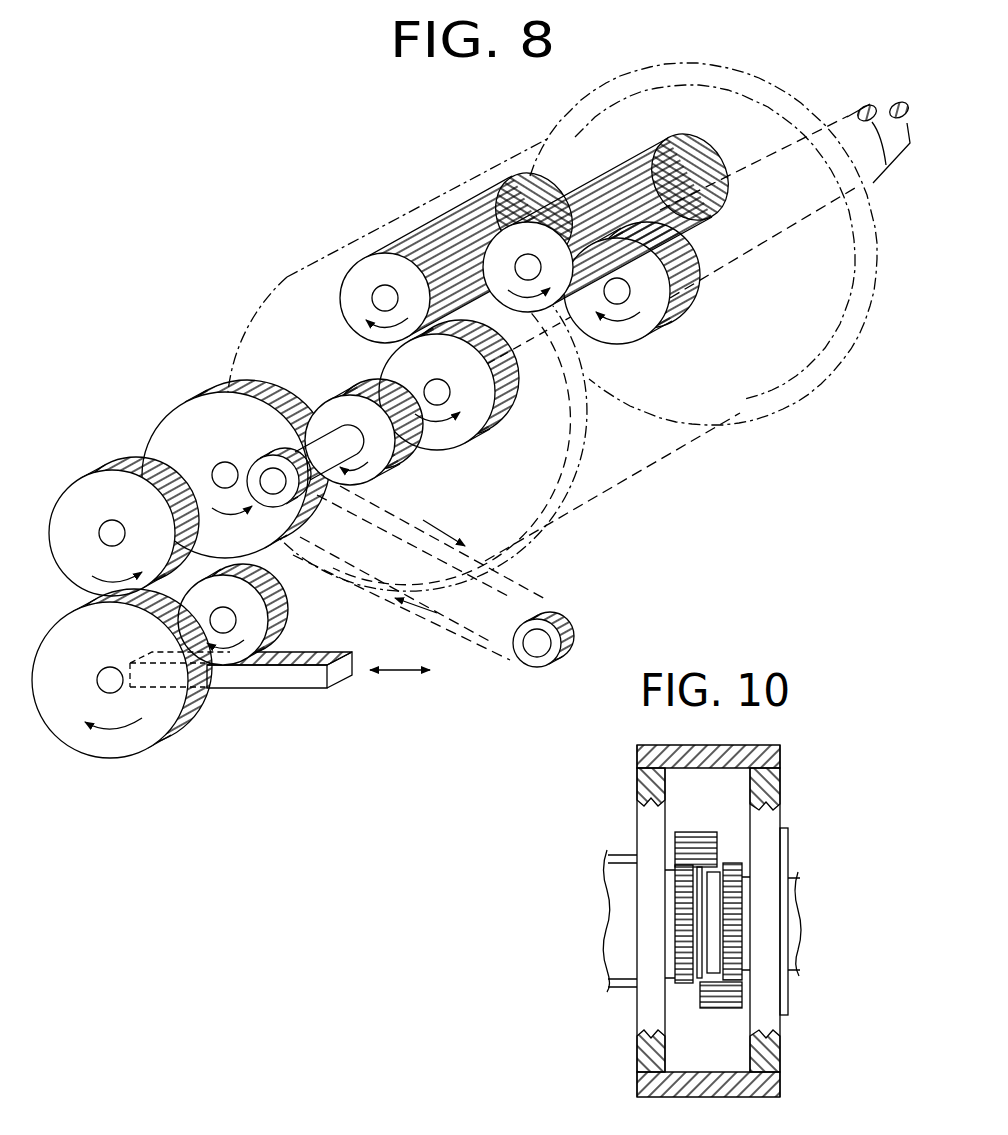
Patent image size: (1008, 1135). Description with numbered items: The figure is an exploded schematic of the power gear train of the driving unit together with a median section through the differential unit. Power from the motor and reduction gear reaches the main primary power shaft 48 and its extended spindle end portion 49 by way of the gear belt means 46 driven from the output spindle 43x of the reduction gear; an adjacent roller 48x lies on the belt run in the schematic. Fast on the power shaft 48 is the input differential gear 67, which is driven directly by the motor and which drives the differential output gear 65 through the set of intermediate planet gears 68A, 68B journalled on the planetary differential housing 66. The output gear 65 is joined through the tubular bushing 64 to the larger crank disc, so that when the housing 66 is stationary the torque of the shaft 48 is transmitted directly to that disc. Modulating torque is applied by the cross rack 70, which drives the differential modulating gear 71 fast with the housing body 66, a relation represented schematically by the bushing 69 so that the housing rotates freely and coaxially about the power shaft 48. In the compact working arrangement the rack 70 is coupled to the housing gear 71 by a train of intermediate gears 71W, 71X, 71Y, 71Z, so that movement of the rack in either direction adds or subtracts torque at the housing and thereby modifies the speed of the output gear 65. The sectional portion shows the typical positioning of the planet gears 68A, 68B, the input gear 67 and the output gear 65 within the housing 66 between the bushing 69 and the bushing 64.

In FIG. 8, the output spindle of the reduction gear 43x is at (530, 658).
In FIG. 8, the gear belt means 46 is at (508, 578).
In FIG. 8, the main primary power shaft 48 is at (345, 452).
In FIG. 8, the roller 48x is at (266, 458).
In FIG. 8, the extended spindle end portion 49 is at (891, 106).
In FIG. 8, the tubular bushing 64 is at (848, 116).
In FIG. 10, the tubular bushing 64 is at (797, 905).
In FIG. 8, the differential output gear 65 is at (663, 297).
In FIG. 10, the differential output gear 65 is at (733, 858).
In FIG. 8, the planetary differential housing 66 is at (287, 277).
In FIG. 10, the planetary differential housing 66 is at (748, 744).
In FIG. 8, the input differential gear 67 is at (446, 364).
In FIG. 10, the input differential gear 67 is at (680, 985).
In FIG. 8, the intermediate planet gear 68A is at (451, 217).
In FIG. 10, the intermediate planet gear 68A is at (693, 828).
In FIG. 8, the intermediate planet gear 68B is at (596, 182).
In FIG. 10, the intermediate planet gear 68B is at (720, 1010).
In FIG. 10, the bushing 69 is at (615, 893).
In FIG. 8, the cross rack 70 is at (292, 658).
In FIG. 8, the differential modulating gear 71 is at (355, 418).
In FIG. 8, the intermediate gear 71W is at (245, 610).
In FIG. 8, the intermediate gear 71X is at (121, 648).
In FIG. 8, the intermediate gear 71Y is at (126, 504).
In FIG. 8, the intermediate gear 71Z is at (211, 437).